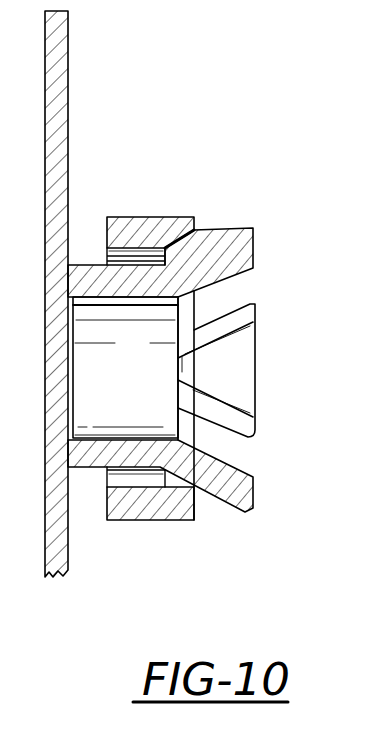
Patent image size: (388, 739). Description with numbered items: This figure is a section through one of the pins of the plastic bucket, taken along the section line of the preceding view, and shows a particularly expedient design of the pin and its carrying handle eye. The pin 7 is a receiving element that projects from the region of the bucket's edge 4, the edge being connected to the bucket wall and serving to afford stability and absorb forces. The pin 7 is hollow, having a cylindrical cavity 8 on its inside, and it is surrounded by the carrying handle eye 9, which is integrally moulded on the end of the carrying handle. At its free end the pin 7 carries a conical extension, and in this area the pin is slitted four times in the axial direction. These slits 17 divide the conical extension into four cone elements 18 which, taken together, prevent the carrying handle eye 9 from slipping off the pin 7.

The edge 4 is at (68, 106).
The pin 7 is at (146, 452).
The cylindrical cavity 8 is at (133, 389).
The carrying handle eye 9 is at (164, 220).
The slits 17 is at (245, 288).
The cone elements 18 is at (256, 243).